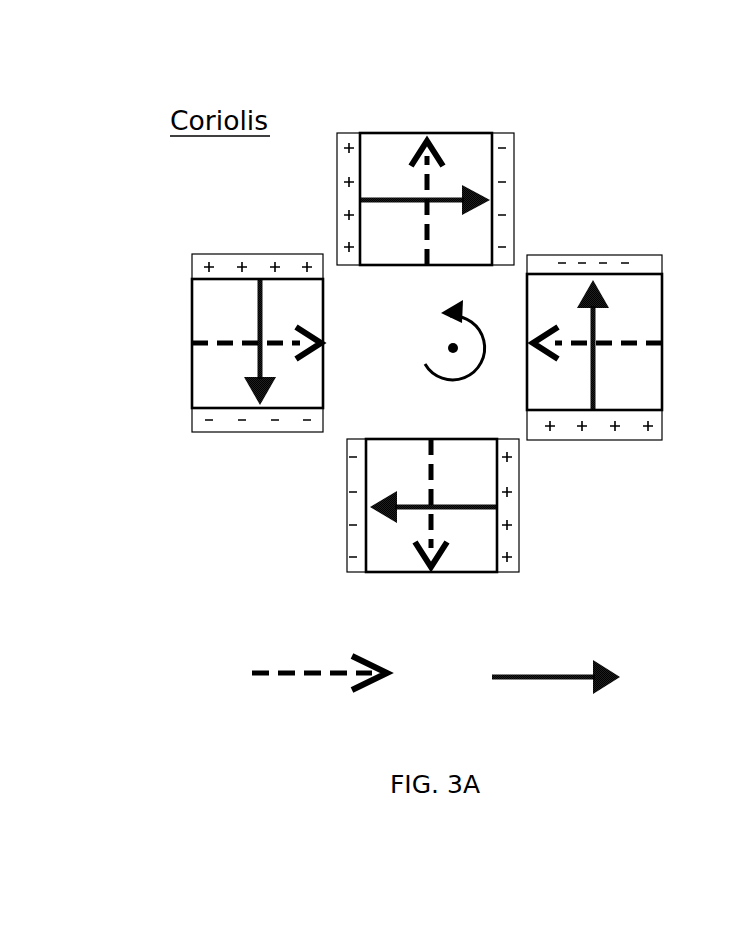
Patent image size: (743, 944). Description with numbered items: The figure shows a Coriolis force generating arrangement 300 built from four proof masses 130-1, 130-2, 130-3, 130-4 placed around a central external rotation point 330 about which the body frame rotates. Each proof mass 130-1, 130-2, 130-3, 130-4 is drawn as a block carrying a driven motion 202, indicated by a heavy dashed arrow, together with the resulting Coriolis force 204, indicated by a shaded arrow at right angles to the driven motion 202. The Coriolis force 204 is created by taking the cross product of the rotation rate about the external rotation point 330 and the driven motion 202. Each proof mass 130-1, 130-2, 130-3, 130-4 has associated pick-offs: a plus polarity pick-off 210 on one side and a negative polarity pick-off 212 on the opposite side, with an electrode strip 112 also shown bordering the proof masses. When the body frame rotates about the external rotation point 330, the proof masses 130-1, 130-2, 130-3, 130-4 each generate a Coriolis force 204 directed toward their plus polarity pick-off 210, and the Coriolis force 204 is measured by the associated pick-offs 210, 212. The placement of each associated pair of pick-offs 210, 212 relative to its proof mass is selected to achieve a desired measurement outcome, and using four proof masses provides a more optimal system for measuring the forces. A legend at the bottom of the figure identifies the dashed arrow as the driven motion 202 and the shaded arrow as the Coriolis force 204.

The Coriolis force generating arrangement 300 is at (574, 188).
The proof mass 130-1 is at (207, 292).
The proof mass 130-2 is at (488, 176).
The proof mass 130-3 is at (648, 393).
The proof mass 130-4 is at (477, 557).
The plus polarity pick-off 210 is at (337, 204).
The negative polarity pick-off 212 is at (240, 432).
The electrode 112 is at (508, 202).
The driven motion 202 is at (428, 185).
The Coriolis force 204 is at (402, 198).
The external rotation point 330 is at (447, 347).